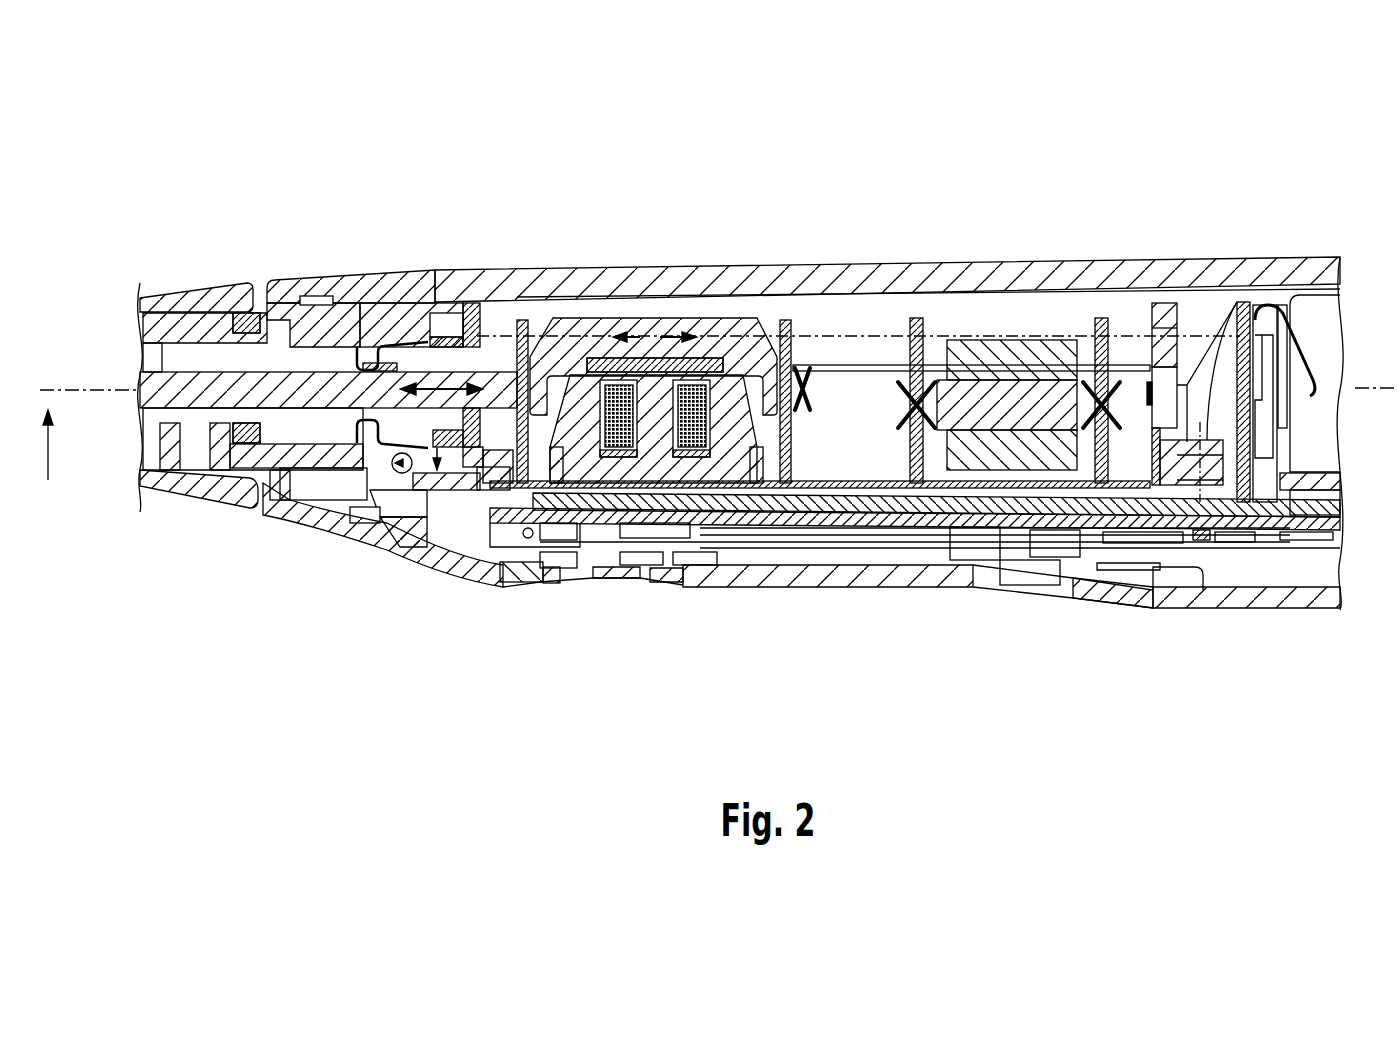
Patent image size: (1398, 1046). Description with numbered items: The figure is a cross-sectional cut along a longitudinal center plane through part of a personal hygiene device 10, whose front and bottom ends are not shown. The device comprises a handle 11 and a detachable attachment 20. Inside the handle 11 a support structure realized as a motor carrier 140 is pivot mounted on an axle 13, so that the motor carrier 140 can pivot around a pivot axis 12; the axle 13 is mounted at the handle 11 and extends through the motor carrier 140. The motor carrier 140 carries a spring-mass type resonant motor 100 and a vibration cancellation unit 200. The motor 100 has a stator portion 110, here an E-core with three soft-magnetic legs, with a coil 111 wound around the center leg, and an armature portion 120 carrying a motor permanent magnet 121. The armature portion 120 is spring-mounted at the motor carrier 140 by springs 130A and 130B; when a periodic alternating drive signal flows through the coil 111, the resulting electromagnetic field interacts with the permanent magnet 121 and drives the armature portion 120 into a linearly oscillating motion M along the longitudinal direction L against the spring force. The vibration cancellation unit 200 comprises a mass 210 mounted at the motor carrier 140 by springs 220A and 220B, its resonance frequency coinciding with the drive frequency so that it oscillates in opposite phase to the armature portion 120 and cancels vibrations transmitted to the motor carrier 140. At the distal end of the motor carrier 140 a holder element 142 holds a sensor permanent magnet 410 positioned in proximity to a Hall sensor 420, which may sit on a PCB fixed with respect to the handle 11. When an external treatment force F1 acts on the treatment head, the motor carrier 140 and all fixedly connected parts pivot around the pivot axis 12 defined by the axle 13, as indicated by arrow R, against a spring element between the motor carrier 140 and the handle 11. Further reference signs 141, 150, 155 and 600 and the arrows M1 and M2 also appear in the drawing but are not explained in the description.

The personal hygiene device 10 is at (857, 194).
The handle 11 is at (1040, 275).
The pivot axis 12 is at (320, 532).
The axle 13 is at (373, 548).
The detachable attachment 20 is at (199, 296).
The spring-mass type resonant motor 100 is at (678, 310).
The stator portion 110 is at (648, 462).
The coil 111 is at (612, 458).
The armature portion 120 is at (585, 332).
The motor permanent magnet 121 is at (718, 356).
The spring 130A is at (518, 447).
The spring 130B is at (790, 425).
The motor carrier 140 is at (815, 487).
The hub bearing 141 is at (227, 458).
The holder element 142 is at (1174, 325).
The coupling sleeve 150 is at (312, 290).
The seal 155 is at (396, 333).
The vibration cancellation unit 200 is at (1007, 332).
The mass 210 is at (1015, 452).
The spring 220A is at (915, 442).
The spring 220B is at (1105, 432).
The sensor permanent magnet 410 is at (1237, 300).
The Hall sensor 420 is at (1203, 540).
The circuit board 600 is at (745, 507).
The longitudinal direction L is at (97, 388).
The linearly oscillating motion M is at (645, 328).
The shaft movement direction M1 is at (439, 382).
The actuator movement direction M2 is at (1212, 503).
The external treatment force F1 is at (48, 455).
The pivoting motion arrow R is at (404, 480).